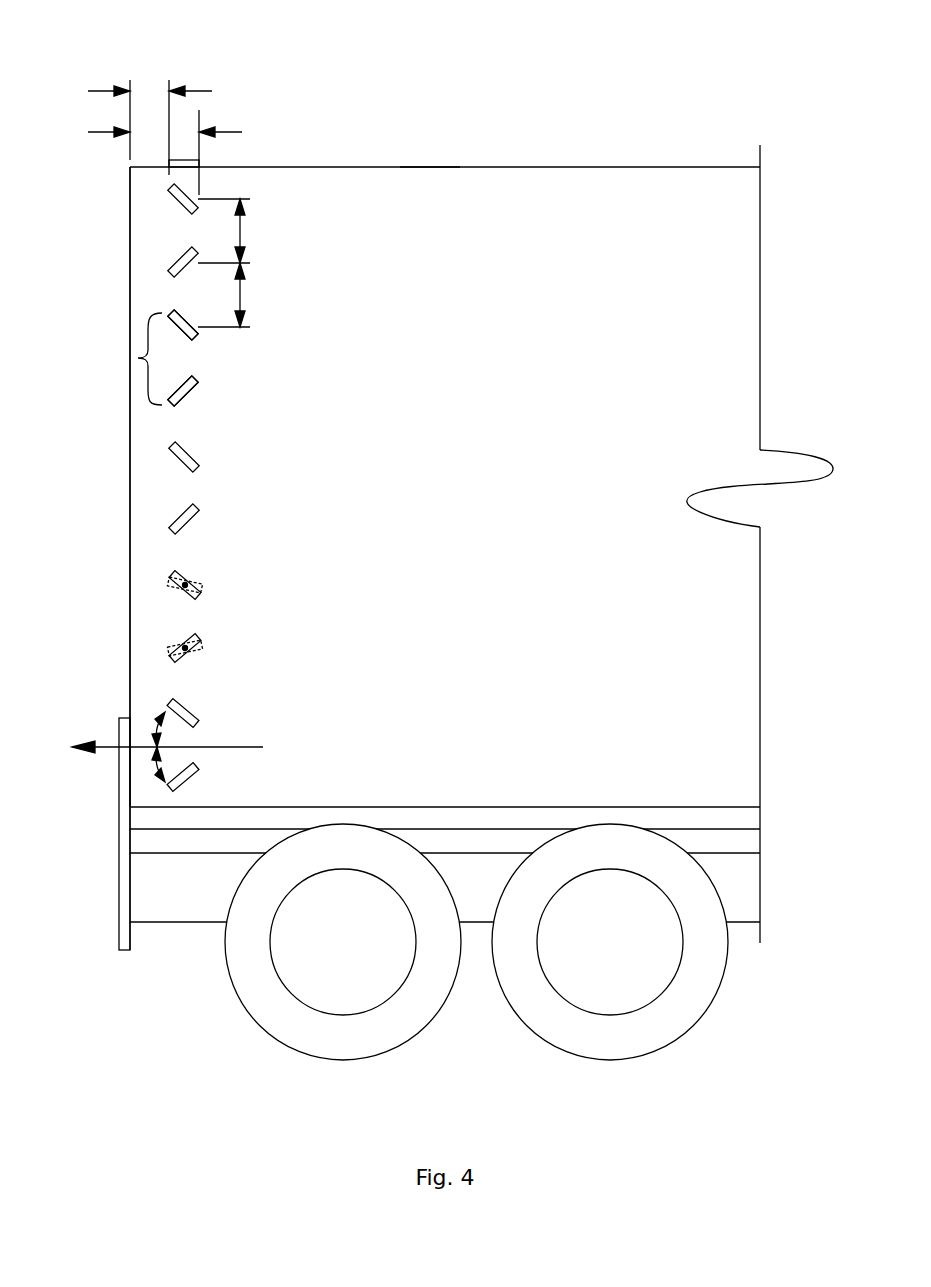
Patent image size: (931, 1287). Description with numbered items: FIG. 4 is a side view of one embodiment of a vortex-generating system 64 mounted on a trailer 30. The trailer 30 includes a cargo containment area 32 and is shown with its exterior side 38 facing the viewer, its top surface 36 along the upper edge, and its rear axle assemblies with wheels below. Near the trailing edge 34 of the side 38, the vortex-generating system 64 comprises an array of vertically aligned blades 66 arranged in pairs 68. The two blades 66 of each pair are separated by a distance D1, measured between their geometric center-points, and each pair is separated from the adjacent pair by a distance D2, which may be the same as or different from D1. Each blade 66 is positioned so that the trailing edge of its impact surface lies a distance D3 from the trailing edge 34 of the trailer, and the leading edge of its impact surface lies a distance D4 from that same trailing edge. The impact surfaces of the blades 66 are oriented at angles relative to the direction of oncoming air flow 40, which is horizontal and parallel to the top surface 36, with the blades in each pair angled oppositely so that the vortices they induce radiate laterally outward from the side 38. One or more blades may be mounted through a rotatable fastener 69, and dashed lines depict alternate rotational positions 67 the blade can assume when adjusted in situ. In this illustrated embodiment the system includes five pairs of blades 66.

The trailer 30 is at (622, 160).
The cargo containment area 32 is at (490, 190).
The trailing edge 34 is at (130, 211).
The top surface 36 is at (409, 167).
The exterior side 38 is at (502, 539).
The air flow 40 is at (108, 745).
The vortex-generating system 64 is at (205, 496).
The blades 66 is at (192, 340).
The alternate rotational positions 67 is at (170, 584).
The pairs of blades 68 is at (138, 358).
The rotatable fastener 69 is at (185, 648).
The distance D1 is at (240, 230).
The distance D2 is at (240, 294).
The distance D3 is at (89, 91).
The distance D4 is at (234, 132).